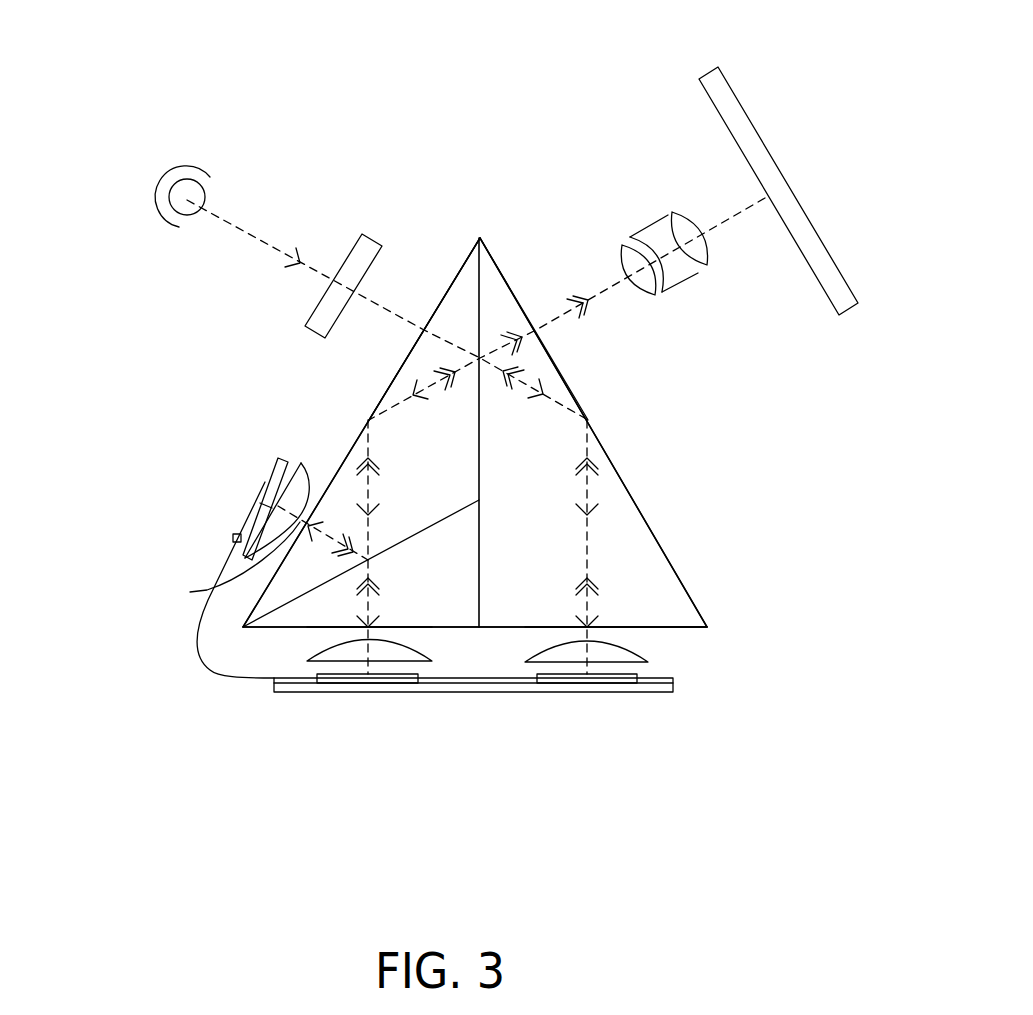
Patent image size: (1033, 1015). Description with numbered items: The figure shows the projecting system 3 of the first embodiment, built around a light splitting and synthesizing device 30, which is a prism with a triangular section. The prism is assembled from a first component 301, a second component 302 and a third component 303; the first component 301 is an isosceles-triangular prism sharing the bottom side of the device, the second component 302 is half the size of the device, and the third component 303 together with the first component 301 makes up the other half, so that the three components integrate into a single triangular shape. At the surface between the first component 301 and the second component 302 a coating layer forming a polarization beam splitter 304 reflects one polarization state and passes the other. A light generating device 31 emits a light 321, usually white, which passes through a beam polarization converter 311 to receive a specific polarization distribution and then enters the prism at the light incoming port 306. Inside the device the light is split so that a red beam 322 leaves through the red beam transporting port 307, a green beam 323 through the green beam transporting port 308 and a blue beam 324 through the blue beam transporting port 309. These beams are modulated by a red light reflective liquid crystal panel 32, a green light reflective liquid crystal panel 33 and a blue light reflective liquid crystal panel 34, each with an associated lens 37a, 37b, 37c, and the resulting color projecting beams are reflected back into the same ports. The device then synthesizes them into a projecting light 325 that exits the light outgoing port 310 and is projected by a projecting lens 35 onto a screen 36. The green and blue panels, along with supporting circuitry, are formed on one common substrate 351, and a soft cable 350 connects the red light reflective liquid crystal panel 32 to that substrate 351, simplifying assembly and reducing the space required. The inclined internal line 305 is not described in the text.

The projecting system 3 is at (488, 125).
The light splitting and synthesizing device 30 is at (683, 582).
The first component 301 is at (462, 297).
The second component 302 is at (638, 537).
The third component 303 is at (307, 608).
The polarization beam splitter 304 is at (481, 297).
The inclined reflecting surface 305 is at (433, 523).
The light incoming port 306 is at (420, 336).
The red beam transporting port 307 is at (190, 592).
The green beam transporting port 308 is at (600, 628).
The blue beam transporting port 309 is at (440, 653).
The light outgoing port 310 is at (537, 331).
The light generating device 31 is at (173, 173).
The beam polarization converter 311 is at (353, 243).
The red light reflective liquid crystal panel 32 is at (265, 482).
The green light reflective liquid crystal panel 33 is at (630, 683).
The blue light reflective liquid crystal panel 34 is at (327, 683).
The projecting lens 35 is at (650, 238).
The screen 36 is at (813, 237).
The lens 37a is at (303, 462).
The lens 37b is at (674, 685).
The lens 37c is at (302, 662).
The light 321 is at (257, 237).
The red beam 322 is at (300, 522).
The green beam 323 is at (580, 637).
The blue beam 324 is at (370, 645).
The projecting light 325 is at (610, 289).
The soft cable 350 is at (221, 678).
The substrate 351 is at (520, 687).